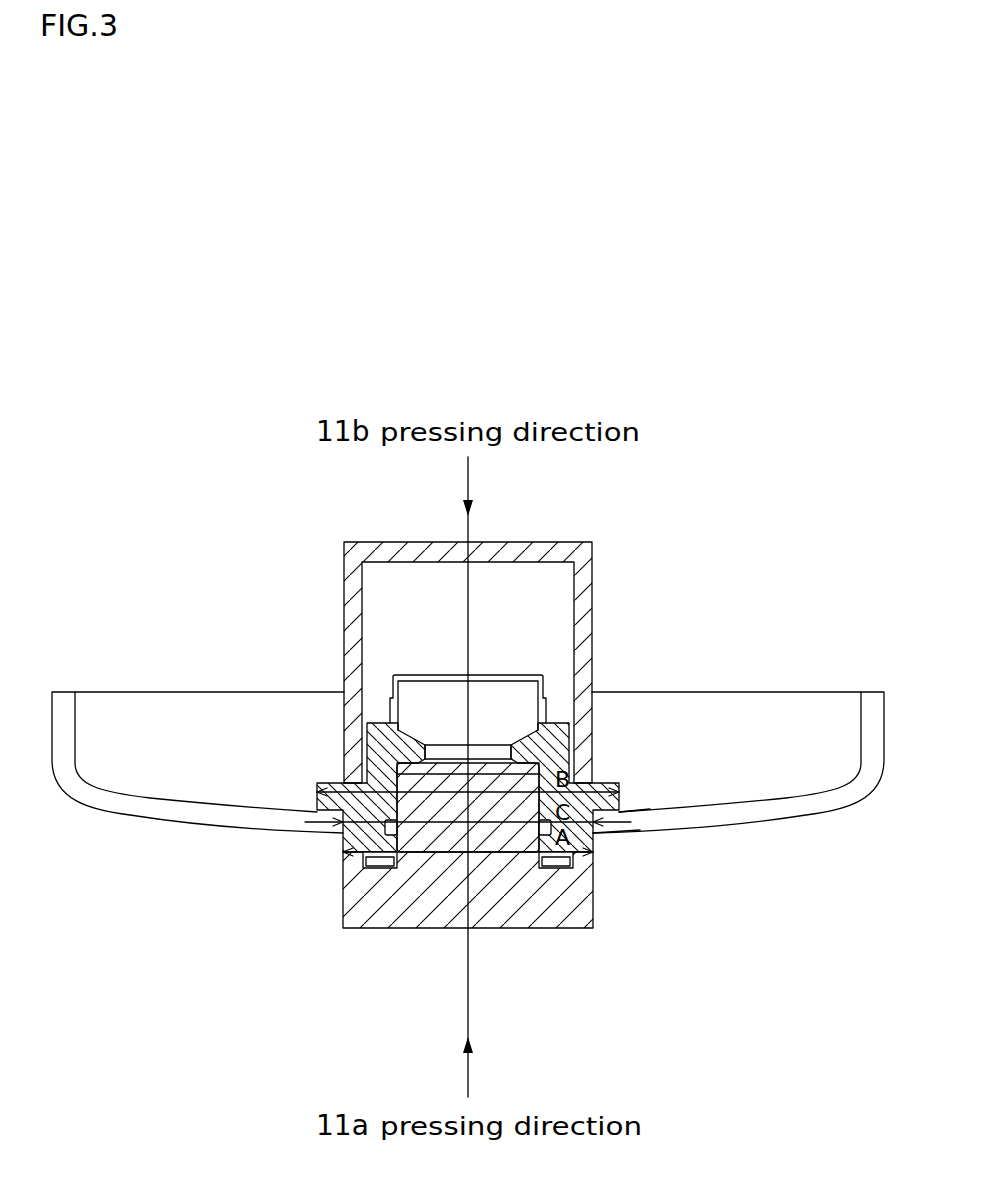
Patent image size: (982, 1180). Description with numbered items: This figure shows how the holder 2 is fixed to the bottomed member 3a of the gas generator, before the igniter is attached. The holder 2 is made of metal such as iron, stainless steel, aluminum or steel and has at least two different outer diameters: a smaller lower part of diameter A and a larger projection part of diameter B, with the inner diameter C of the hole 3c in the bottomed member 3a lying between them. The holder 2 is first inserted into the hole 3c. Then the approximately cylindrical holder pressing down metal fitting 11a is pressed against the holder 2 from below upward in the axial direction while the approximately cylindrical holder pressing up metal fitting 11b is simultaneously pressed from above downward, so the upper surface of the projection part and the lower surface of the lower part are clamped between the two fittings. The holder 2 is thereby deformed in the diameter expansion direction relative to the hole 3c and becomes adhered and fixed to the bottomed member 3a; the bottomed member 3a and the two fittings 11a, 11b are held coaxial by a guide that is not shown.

The holder pressing down metal fitting 11a is at (530, 918).
The holder pressing up metal fitting 11b is at (568, 552).
The holder 2 is at (363, 807).
The bottomed member 3a is at (208, 817).
The hole 3c is at (598, 830).